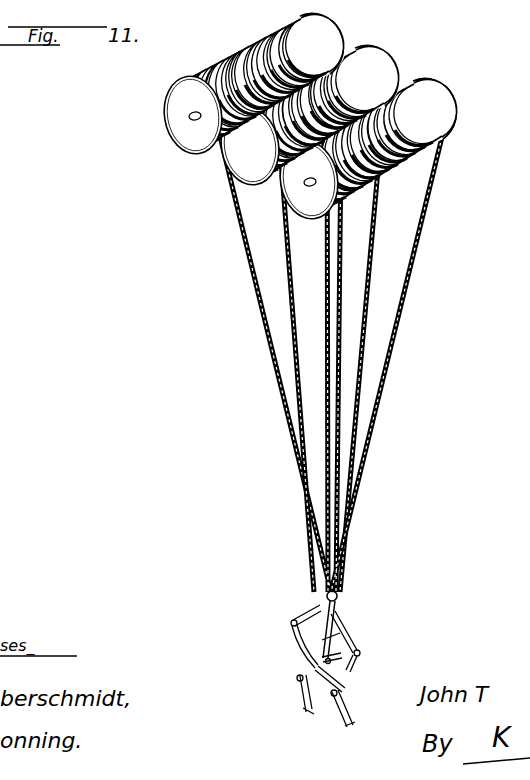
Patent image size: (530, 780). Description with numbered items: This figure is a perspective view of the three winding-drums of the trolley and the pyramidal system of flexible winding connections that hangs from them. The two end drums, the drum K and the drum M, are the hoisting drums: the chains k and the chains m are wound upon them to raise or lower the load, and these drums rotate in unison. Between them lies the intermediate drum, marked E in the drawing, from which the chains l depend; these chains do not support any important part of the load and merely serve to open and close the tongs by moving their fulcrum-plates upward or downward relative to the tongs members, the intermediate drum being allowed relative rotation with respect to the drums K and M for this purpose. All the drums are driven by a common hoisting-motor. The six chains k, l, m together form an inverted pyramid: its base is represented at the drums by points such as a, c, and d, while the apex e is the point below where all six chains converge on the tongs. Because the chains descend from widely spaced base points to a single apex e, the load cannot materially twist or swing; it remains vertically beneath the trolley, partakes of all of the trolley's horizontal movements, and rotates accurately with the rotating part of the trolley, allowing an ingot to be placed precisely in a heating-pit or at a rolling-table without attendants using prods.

The base corner of inverted chain pyramid a is at (448, 123).
The base corner of inverted chain pyramid d is at (328, 35).
The winding-drum K is at (255, 83).
The hoisting drum E is at (311, 114).
The winding-drum M is at (369, 148).
The base corner of inverted chain pyramid c is at (220, 124).
The chains k is at (229, 173).
The chains l is at (286, 205).
The chains m is at (339, 234).
The apex of inverted chain pyramid e is at (338, 596).